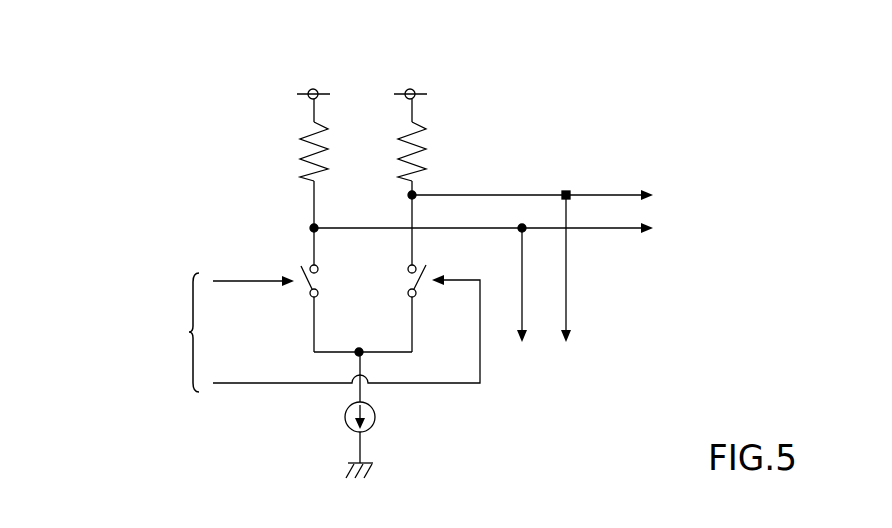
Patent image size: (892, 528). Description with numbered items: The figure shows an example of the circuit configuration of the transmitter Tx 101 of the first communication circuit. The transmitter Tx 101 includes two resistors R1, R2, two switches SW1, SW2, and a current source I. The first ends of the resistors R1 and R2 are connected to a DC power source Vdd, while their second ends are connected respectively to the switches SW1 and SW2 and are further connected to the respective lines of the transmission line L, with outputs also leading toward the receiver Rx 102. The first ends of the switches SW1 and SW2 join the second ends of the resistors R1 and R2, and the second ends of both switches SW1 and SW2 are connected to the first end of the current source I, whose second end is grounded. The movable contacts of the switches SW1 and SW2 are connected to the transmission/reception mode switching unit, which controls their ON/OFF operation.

The transmitter Tx 101 is at (216, 49).
The receiver Rx 102 is at (602, 282).
The resistor R1 is at (295, 182).
The resistor R2 is at (393, 182).
The switch SW1 is at (265, 298).
The switch SW2 is at (346, 313).